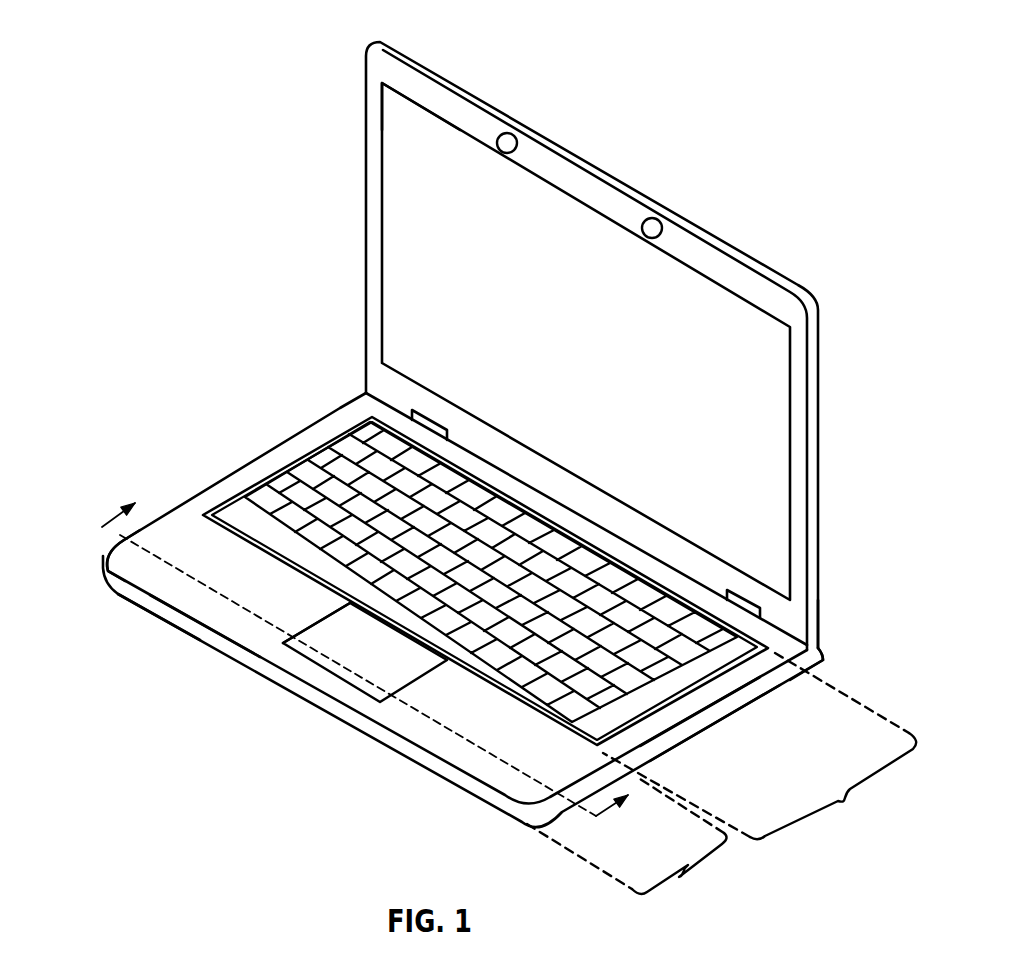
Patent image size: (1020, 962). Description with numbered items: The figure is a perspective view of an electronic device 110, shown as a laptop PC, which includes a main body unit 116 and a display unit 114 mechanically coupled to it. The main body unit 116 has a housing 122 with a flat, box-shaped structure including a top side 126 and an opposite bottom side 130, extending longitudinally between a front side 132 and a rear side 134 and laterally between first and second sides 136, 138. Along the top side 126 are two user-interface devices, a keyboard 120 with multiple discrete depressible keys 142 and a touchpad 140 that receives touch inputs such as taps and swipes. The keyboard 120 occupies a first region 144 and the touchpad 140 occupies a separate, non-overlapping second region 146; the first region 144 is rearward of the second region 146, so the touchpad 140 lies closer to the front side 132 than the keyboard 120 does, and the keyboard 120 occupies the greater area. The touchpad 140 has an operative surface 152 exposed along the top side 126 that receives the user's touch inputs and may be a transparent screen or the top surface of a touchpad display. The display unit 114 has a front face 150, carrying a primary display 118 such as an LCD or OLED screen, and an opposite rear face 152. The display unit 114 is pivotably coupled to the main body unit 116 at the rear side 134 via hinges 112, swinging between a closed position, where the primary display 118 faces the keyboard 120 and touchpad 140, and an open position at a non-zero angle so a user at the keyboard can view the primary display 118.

The electronic device 110 is at (232, 68).
The hinges 112 is at (410, 413).
The display unit 114 is at (591, 158).
The main body unit 116 is at (160, 505).
The primary display 118 is at (743, 327).
The keyboard 120 is at (292, 482).
The housing 122 is at (653, 728).
The top side 126 is at (158, 507).
The bottom side 130 is at (137, 603).
The front side 132 is at (202, 630).
The rear side 134 is at (820, 650).
The first side 136 is at (187, 533).
The second side 138 is at (707, 718).
The touchpad 140 is at (410, 670).
The keys 142 is at (293, 480).
The first region 144 is at (840, 801).
The second region 146 is at (684, 869).
The front face 150 is at (437, 102).
The operative surface 152 is at (449, 80).